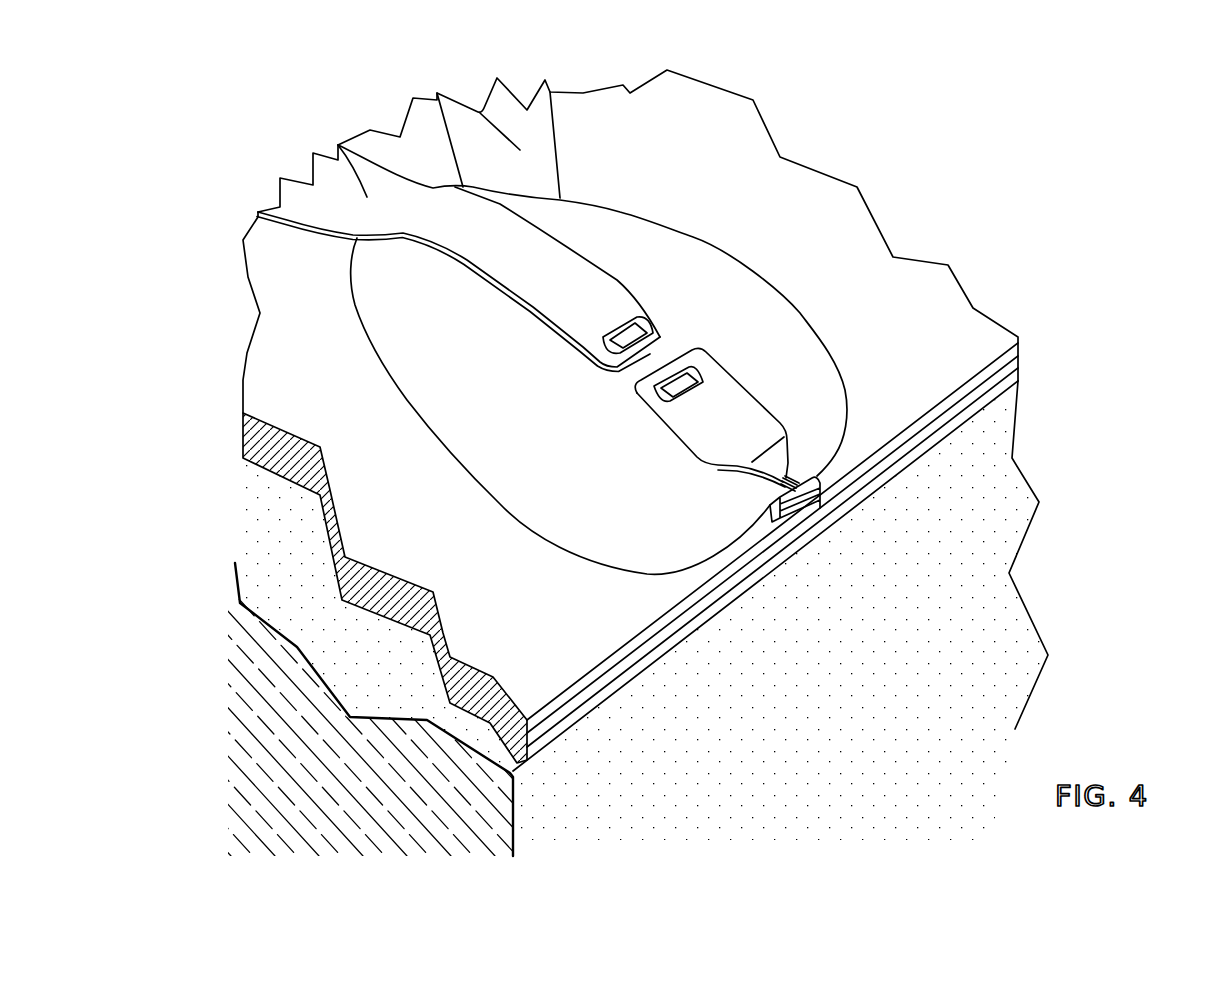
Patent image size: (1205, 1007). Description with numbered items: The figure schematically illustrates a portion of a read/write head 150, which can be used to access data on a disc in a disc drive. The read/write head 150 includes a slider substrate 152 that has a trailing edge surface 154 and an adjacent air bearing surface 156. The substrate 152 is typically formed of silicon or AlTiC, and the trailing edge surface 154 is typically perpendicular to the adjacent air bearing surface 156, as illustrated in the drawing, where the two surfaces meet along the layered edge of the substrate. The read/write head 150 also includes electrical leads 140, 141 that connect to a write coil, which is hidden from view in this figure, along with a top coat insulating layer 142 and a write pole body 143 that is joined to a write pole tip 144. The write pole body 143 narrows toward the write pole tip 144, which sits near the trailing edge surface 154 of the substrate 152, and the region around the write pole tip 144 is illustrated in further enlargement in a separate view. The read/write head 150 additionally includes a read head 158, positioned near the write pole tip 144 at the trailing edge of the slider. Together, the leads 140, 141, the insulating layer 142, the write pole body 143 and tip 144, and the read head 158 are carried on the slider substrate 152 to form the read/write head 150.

The electrical lead 140 is at (338, 145).
The electrical lead 141 is at (437, 93).
The top coat insulating layer 142 is at (640, 263).
The write pole body 143 is at (751, 390).
The write pole tip 144 is at (803, 477).
The read/write head 150 is at (1071, 206).
The slider substrate 152 is at (1012, 458).
The trailing edge surface 154 is at (378, 674).
The air bearing surface 156 is at (792, 741).
The read head 158 is at (787, 520).